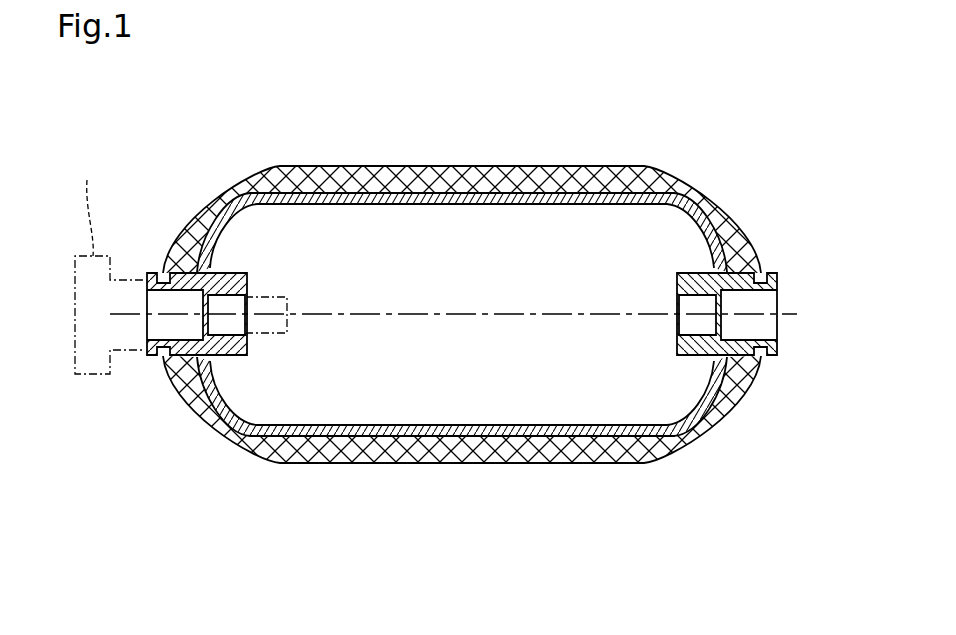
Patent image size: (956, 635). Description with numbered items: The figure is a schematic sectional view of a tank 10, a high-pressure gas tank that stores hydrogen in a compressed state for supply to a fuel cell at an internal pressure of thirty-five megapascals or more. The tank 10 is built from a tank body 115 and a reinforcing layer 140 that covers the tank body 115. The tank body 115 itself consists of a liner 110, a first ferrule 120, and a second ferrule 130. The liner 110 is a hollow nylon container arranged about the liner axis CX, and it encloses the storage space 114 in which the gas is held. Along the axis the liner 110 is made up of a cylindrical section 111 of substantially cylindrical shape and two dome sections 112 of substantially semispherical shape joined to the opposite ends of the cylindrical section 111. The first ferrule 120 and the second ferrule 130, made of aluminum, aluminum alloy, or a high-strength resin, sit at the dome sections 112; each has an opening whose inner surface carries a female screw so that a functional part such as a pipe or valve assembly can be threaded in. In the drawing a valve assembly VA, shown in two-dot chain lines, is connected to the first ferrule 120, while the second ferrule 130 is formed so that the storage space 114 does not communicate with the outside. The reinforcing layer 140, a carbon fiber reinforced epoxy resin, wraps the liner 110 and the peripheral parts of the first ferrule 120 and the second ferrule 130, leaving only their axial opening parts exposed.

The tank 10 is at (608, 122).
The liner 110 is at (472, 422).
The cylindrical section 111 is at (463, 205).
The dome sections 112 is at (221, 219).
The storage space 114 is at (497, 349).
The tank body 115 is at (752, 527).
The first ferrule 120 is at (183, 393).
The second ferrule 130 is at (735, 392).
The reinforcing layer 140 is at (482, 178).